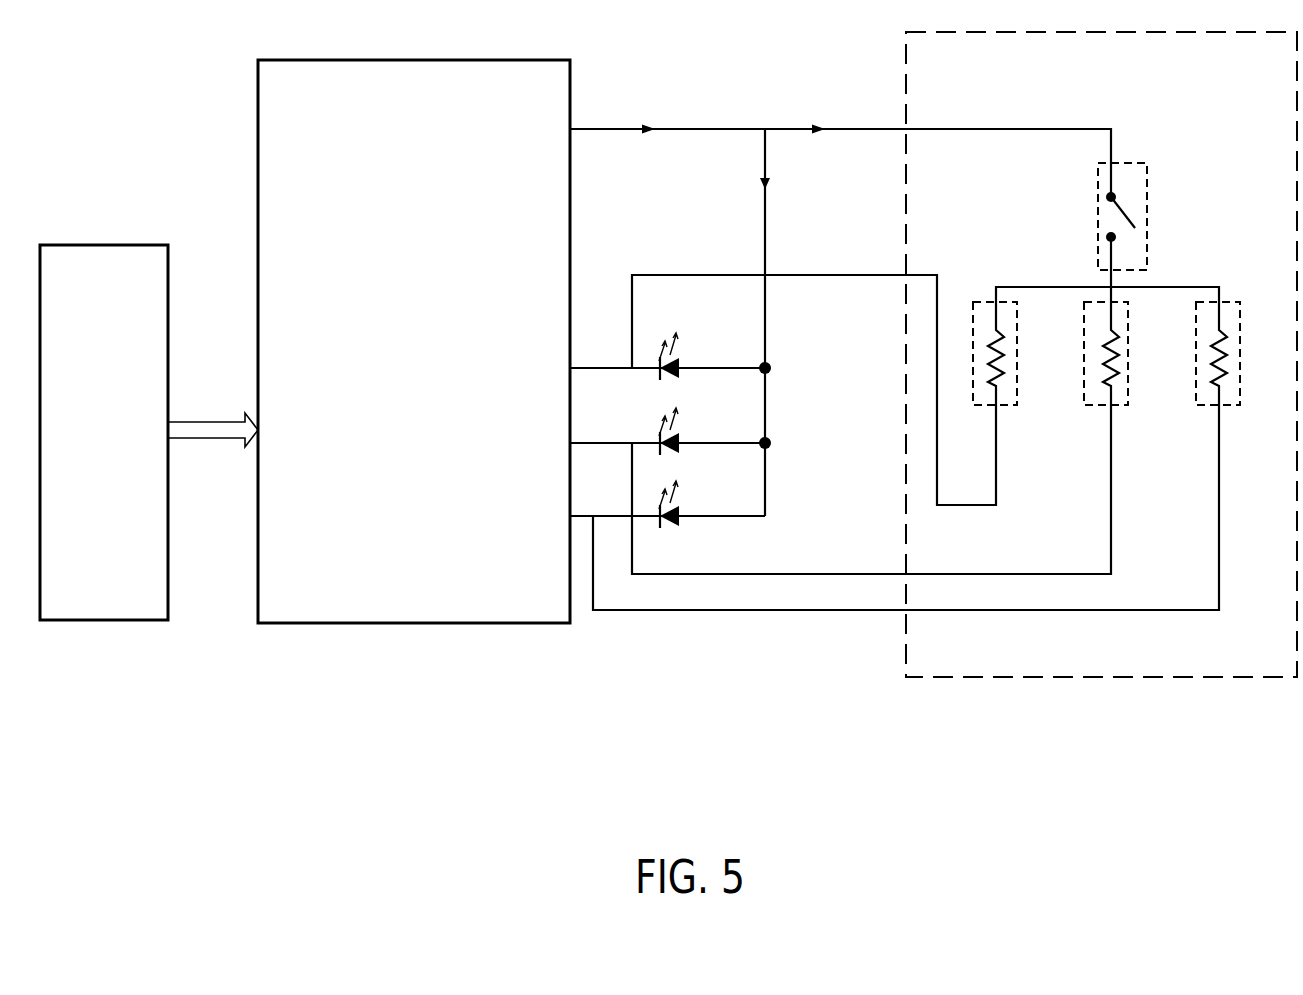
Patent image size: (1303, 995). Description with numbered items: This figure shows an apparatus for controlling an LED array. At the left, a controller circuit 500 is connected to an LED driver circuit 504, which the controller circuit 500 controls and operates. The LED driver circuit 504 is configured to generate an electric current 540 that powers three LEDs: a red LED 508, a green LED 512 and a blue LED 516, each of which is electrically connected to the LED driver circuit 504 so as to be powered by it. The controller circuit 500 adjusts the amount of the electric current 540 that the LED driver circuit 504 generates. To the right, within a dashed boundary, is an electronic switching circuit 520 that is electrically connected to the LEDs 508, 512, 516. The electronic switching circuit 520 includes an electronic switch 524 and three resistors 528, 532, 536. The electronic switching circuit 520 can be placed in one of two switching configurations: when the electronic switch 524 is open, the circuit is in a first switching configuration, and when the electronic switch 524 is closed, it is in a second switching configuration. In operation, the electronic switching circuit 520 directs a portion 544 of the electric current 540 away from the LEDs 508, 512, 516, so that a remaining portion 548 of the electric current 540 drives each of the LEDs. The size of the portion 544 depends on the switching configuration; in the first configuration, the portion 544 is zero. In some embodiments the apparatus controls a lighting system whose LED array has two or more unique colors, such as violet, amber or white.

The controller circuit 500 is at (121, 457).
The LED driver circuit 504 is at (439, 334).
The red LED 508 is at (680, 358).
The green LED 512 is at (680, 433).
The blue LED 516 is at (680, 506).
The electronic switching circuit 520 is at (963, 67).
The electronic switch 524 is at (1145, 186).
The resistor 528 is at (1003, 341).
The resistor 532 is at (1113, 341).
The resistor 536 is at (1222, 341).
The electric current 540 is at (650, 128).
The portion of the electric current 544 is at (818, 128).
The remaining portion of the electric current 548 is at (768, 192).